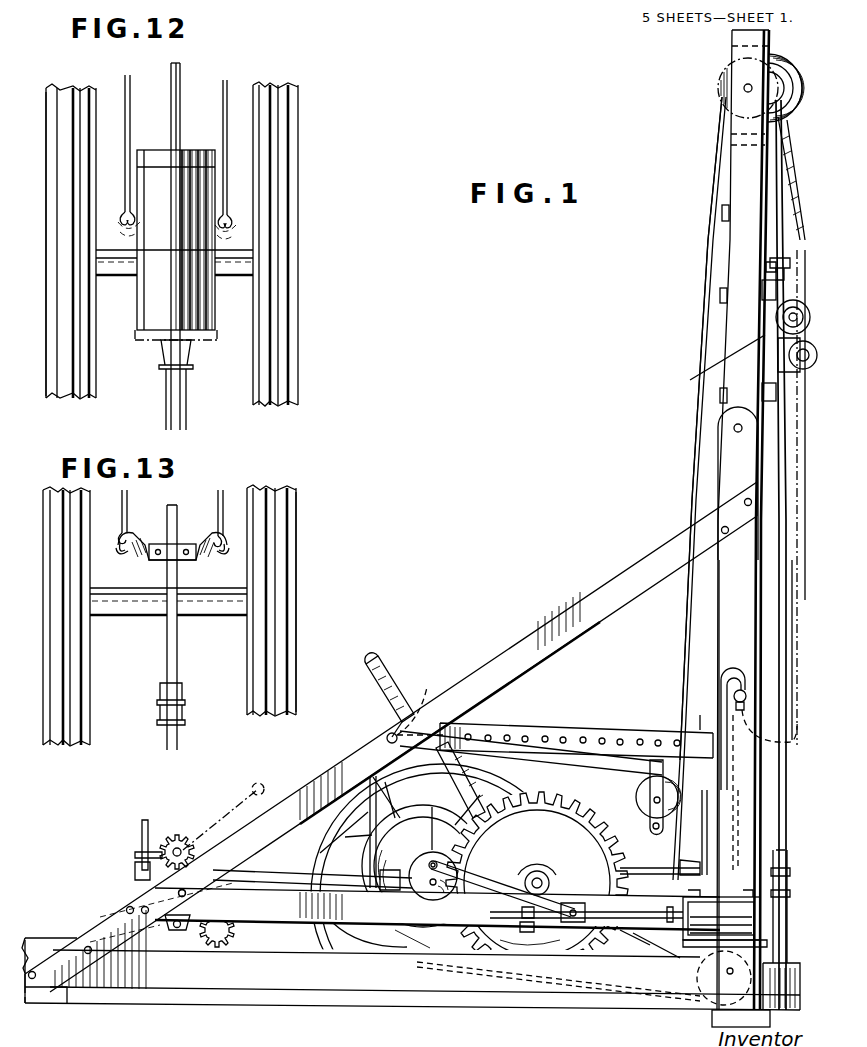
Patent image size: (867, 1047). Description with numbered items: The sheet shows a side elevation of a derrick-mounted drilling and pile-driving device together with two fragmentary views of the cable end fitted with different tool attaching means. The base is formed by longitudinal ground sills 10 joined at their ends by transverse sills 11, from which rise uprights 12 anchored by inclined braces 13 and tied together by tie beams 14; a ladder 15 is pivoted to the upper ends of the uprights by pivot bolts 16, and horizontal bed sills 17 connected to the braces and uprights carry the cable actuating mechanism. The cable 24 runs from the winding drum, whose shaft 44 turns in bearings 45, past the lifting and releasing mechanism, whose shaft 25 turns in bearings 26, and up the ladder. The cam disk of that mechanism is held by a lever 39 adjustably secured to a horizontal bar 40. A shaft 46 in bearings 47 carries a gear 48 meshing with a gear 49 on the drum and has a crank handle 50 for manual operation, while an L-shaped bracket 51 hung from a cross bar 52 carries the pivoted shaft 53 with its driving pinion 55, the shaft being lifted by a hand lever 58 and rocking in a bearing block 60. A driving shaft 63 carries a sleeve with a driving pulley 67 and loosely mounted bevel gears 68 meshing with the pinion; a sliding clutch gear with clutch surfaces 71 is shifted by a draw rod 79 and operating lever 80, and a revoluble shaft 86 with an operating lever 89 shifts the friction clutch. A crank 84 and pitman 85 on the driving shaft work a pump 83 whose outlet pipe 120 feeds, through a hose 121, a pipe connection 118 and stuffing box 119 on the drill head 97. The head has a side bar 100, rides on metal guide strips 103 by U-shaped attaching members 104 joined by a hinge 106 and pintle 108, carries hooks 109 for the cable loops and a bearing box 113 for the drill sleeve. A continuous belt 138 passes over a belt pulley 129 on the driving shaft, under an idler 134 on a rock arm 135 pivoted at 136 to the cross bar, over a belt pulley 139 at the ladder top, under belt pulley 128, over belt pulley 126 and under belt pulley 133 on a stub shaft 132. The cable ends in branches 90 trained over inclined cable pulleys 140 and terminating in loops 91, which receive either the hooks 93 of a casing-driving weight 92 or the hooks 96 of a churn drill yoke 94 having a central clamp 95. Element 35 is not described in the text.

In FIG. 1, the longitudinal ground sills 10 is at (352, 1004).
In FIG. 1, the transverse sills 11 is at (68, 1003).
In FIG. 12, the uprights 12 is at (70, 392).
In FIG. 13, the uprights 12 is at (276, 490).
In FIG. 1, the uprights 12 is at (718, 620).
In FIG. 12, the inclined braces 13 is at (46, 392).
In FIG. 13, the inclined braces 13 is at (296, 552).
In FIG. 1, the inclined braces 13 is at (540, 660).
In FIG. 1, the tie beams 14 is at (690, 873).
In FIG. 1, the ladder 15 is at (724, 340).
In FIG. 1, the pivot bolts 16 is at (720, 440).
In FIG. 1, the bed sills 17 is at (262, 925).
In FIG. 1, the cable 24 is at (657, 958).
In FIG. 1, the shaft 25 is at (536, 872).
In FIG. 1, the bearings 26 is at (545, 872).
In FIG. 1, the bar 35 is at (640, 872).
In FIG. 1, the lever 39 is at (376, 660).
In FIG. 1, the horizontally disposed bar 40 is at (640, 732).
In FIG. 1, the shaft 44 is at (172, 932).
In FIG. 1, the bearings 45 is at (180, 930).
In FIG. 1, the shaft 46 is at (146, 820).
In FIG. 1, the bearings 47 is at (186, 868).
In FIG. 1, the gear 48 is at (178, 835).
In FIG. 1, the gear 49 is at (232, 940).
In FIG. 1, the crank handle 50 is at (223, 807).
In FIG. 1, the L-shaped bracket 51 is at (368, 806).
In FIG. 1, the cross bar 52 is at (386, 738).
In FIG. 1, the shaft 53 is at (300, 872).
In FIG. 1, the driving pinion 55 is at (388, 890).
In FIG. 1, the hand lever 58 is at (135, 856).
In FIG. 1, the bearing block 60 is at (135, 872).
In FIG. 1, the shaft 63 is at (433, 895).
In FIG. 1, the driving pulley 67 is at (350, 790).
In FIG. 1, the bevel gears 68 is at (408, 822).
In FIG. 1, the clutch surfaces 71 is at (522, 955).
In FIG. 1, the draw rod 79 is at (630, 952).
In FIG. 1, the operating lever 80 is at (738, 830).
In FIG. 1, the pump 83 is at (787, 918).
In FIG. 1, the crank 84 is at (418, 950).
In FIG. 1, the pitman 85 is at (585, 985).
In FIG. 1, the revoluble shaft 86 is at (716, 912).
In FIG. 1, the operating lever 89 is at (702, 825).
In FIG. 12, the branches 90 is at (176, 145).
In FIG. 13, the branches 90 is at (173, 513).
In FIG. 1, the branches 90 is at (790, 128).
In FIG. 12, the loops 91 is at (125, 212).
In FIG. 13, the loops 91 is at (128, 538).
In FIG. 1, the loops 91 is at (766, 266).
In FIG. 12, the weight 92 is at (212, 298).
In FIG. 12, the hooks 93 is at (172, 229).
In FIG. 13, the yoke 94 is at (140, 558).
In FIG. 13, the clamp 95 is at (182, 544).
In FIG. 13, the hooks 96 is at (118, 545).
In FIG. 1, the head 97 is at (805, 410).
In FIG. 1, the side bar 100 is at (755, 448).
In FIG. 1, the metal guide strips 103 is at (764, 200).
In FIG. 1, the U-shaped attaching members 104 is at (762, 298).
In FIG. 1, the hinge 106 is at (720, 294).
In FIG. 1, the pintle 108 is at (778, 360).
In FIG. 1, the hooks 109 is at (772, 256).
In FIG. 1, the bearing box 113 is at (778, 322).
In FIG. 1, the pipe connection 118 is at (797, 252).
In FIG. 1, the stuffing box 119 is at (796, 225).
In FIG. 1, the outlet pipe 120 is at (721, 700).
In FIG. 1, the hose 121 is at (780, 739).
In FIG. 1, the belt pulley 126 is at (715, 363).
In FIG. 1, the belt pulley 128 is at (803, 370).
In FIG. 1, the belt pulley 129 is at (405, 962).
In FIG. 1, the stub shaft 132 is at (700, 995).
In FIG. 1, the belt pulley 133 is at (640, 1000).
In FIG. 1, the idler 134 is at (672, 805).
In FIG. 1, the rock arm 135 is at (555, 748).
In FIG. 1, the pivot 136 is at (422, 702).
In FIG. 1, the continuous belt 138 is at (682, 650).
In FIG. 1, the belt pulley 139 is at (720, 80).
In FIG. 1, the cable pulleys 140 is at (794, 80).